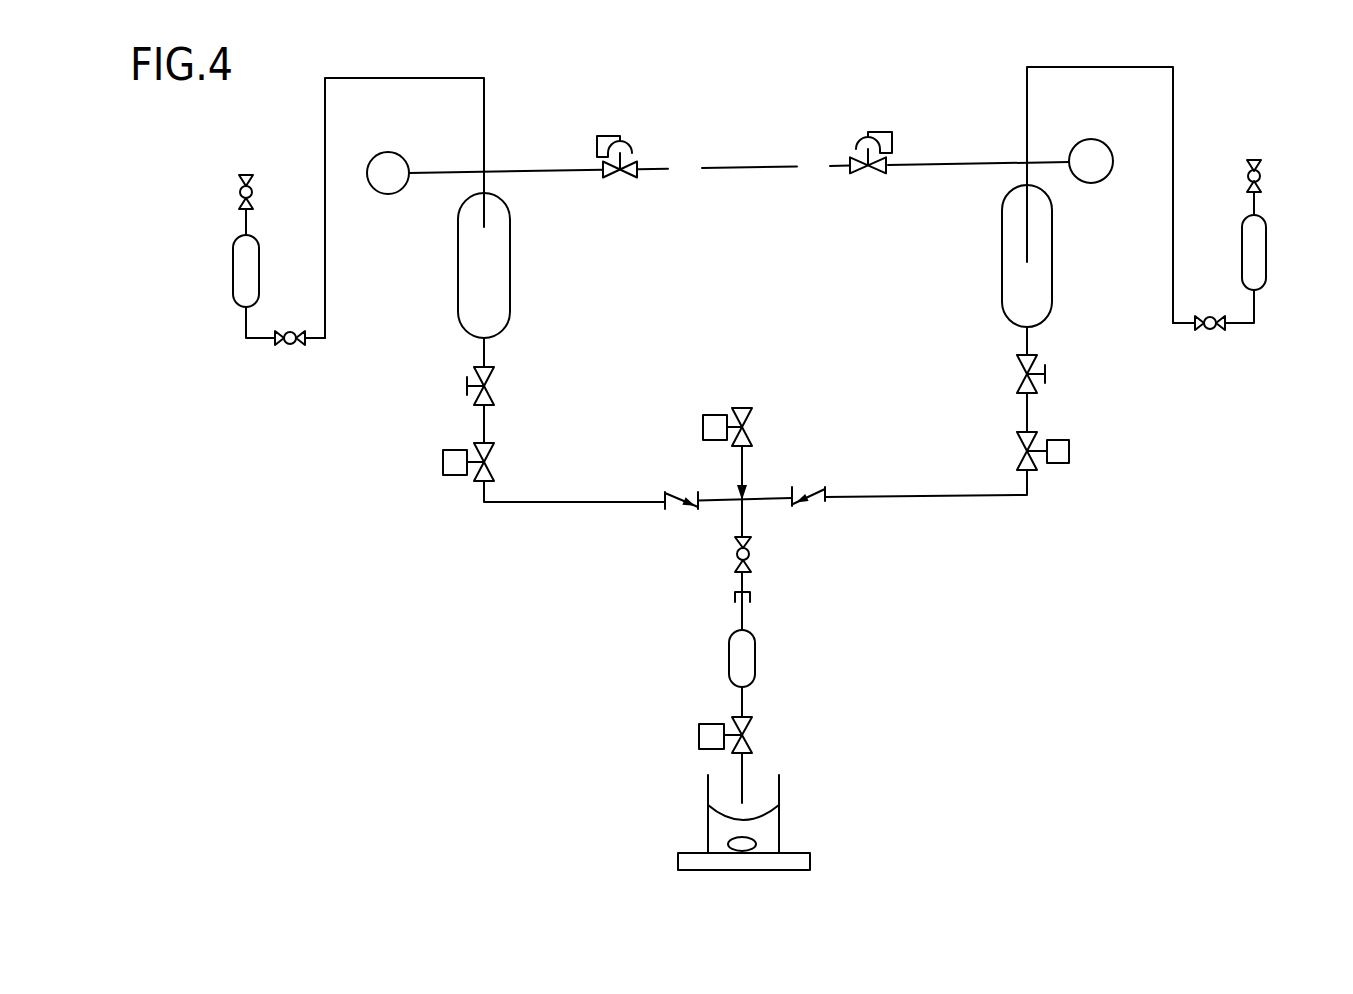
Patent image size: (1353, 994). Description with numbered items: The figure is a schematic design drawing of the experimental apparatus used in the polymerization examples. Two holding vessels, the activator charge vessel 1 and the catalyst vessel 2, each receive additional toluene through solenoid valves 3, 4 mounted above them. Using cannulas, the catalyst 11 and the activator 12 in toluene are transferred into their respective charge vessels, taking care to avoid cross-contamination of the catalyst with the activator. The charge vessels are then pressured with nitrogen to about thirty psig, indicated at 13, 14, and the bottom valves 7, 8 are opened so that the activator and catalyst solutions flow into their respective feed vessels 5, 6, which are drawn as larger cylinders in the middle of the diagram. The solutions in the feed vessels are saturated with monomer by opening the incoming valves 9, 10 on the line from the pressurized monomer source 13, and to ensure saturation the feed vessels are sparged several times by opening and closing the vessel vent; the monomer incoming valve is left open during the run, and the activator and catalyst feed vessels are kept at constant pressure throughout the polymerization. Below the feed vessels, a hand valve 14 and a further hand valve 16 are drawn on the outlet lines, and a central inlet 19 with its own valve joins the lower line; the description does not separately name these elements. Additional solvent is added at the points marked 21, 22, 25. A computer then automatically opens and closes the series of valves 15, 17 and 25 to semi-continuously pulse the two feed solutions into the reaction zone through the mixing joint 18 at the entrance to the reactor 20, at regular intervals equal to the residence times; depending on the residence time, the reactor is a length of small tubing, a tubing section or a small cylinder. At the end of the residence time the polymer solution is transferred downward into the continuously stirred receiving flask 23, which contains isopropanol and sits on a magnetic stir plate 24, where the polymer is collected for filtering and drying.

The activator charge vessel 1 is at (232, 277).
The catalyst vessel 2 is at (1272, 255).
The solenoid valve 3 is at (257, 190).
The solenoid valve 4 is at (1265, 174).
The feed vessel 5 is at (458, 276).
The feed vessel 6 is at (1052, 272).
The bottom valve 7 is at (1208, 306).
The bottom valve 8 is at (290, 322).
The monomer incoming valve 9 is at (631, 149).
The monomer incoming valve 10 is at (865, 140).
The catalyst 11 is at (245, 221).
The activator 12 is at (1262, 202).
The nitrogen pressurization / pressurized monomer source 13 is at (383, 154).
The nitrogen pressurization 14 is at (1103, 141).
The valve 15 is at (495, 452).
The valve 16 is at (1040, 360).
The valve 17 is at (1069, 450).
The mixing joint 18 is at (768, 482).
The supply line 19 is at (742, 407).
The reactor 20 is at (755, 650).
The additional solvent addition 21 is at (1028, 415).
The additional solvent addition 22 is at (484, 427).
The receiving flask 23 is at (779, 830).
The magnetic stir plate 24 is at (810, 862).
The valve 25 is at (765, 731).